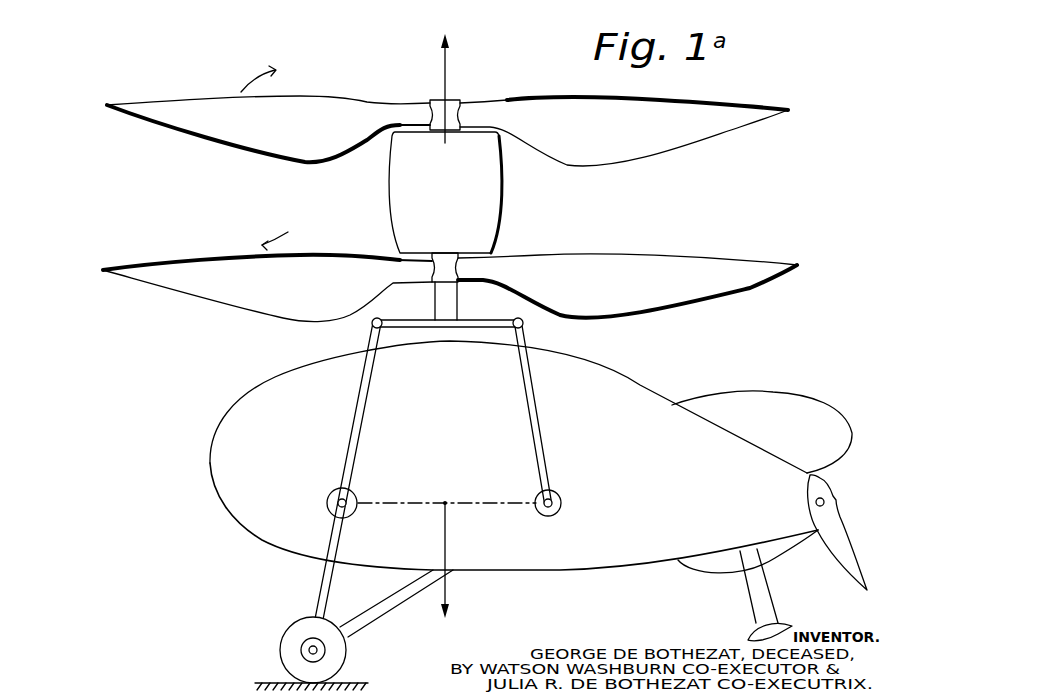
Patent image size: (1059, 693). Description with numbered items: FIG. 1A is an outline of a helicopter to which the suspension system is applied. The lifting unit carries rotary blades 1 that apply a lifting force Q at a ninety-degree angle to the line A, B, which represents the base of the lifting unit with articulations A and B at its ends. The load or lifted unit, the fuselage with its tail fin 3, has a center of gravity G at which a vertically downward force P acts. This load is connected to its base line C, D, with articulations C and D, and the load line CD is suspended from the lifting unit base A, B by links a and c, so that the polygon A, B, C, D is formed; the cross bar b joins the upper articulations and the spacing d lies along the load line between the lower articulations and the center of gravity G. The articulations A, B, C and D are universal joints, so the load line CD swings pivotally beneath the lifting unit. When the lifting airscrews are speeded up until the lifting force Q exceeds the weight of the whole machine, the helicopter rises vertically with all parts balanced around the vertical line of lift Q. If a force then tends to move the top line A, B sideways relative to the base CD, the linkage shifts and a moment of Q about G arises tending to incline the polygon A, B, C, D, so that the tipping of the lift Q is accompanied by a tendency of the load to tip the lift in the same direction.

The rotor blades (lifting screws) 1 is at (247, 152).
The tail fin / rudder 3 is at (836, 527).
The articulation A is at (368, 326).
The articulation B is at (524, 325).
The articulation C is at (328, 496).
The articulation D is at (562, 502).
The center of gravity G is at (452, 490).
The link a is at (345, 486).
The frame cross bar b is at (437, 328).
The link c is at (529, 412).
The horizontal distance between pivots d is at (447, 492).
The vertically downward force P is at (452, 560).
The lifting force Q is at (454, 88).